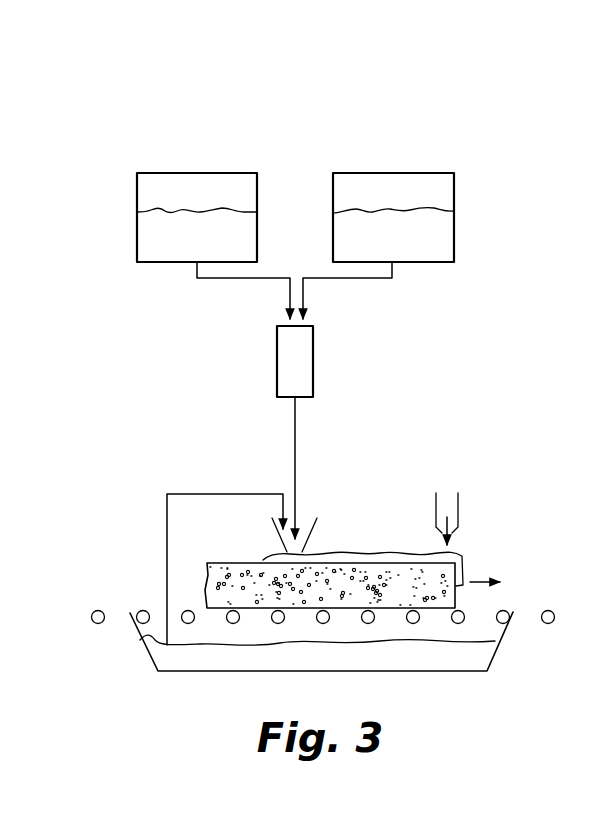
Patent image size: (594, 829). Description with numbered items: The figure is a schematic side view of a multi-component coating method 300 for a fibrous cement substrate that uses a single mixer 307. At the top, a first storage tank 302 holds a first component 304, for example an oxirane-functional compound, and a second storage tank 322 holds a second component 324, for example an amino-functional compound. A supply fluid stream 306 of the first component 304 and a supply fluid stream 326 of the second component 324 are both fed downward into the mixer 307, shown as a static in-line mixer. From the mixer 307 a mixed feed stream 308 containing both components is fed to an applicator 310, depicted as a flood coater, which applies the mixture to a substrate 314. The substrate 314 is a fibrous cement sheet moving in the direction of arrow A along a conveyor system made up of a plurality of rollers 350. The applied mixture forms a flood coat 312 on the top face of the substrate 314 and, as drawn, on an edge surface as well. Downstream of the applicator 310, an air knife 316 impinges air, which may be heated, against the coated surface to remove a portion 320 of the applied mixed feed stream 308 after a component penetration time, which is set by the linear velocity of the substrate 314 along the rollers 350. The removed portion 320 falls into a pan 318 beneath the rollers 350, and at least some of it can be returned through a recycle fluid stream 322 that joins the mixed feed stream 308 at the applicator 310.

The multi-component coating method 300 is at (293, 124).
The first storage tank 302 is at (153, 172).
The first component 304 is at (151, 210).
The supply fluid stream 306 is at (235, 280).
The mixer 307 is at (315, 362).
The mixed feed stream 308 is at (297, 452).
The applicator 310 is at (317, 532).
The flood coat 312 is at (372, 553).
The substrate 314 is at (232, 562).
The air knife 316 is at (462, 510).
The pan 318 is at (503, 638).
The portion of the applied mixed feed stream 320 is at (140, 640).
The second storage tank 322 is at (438, 172).
The second component 324 is at (443, 210).
The supply fluid stream 326 is at (353, 280).
The rollers 350 is at (547, 610).
The direction of substrate movement A is at (482, 578).